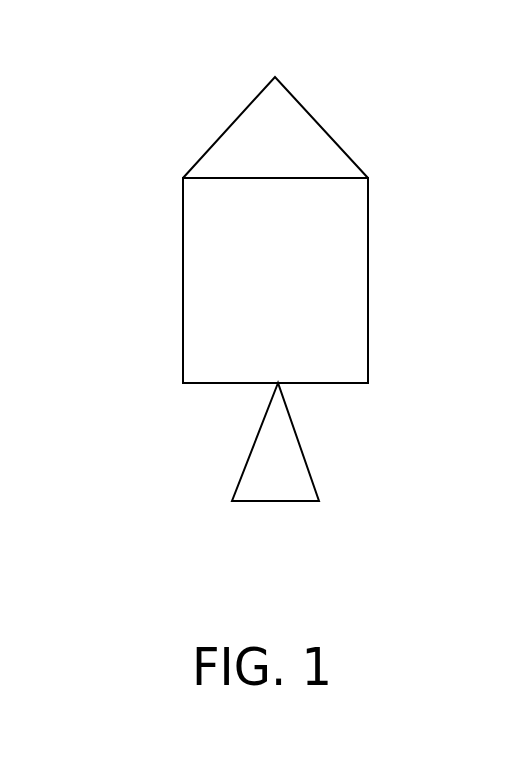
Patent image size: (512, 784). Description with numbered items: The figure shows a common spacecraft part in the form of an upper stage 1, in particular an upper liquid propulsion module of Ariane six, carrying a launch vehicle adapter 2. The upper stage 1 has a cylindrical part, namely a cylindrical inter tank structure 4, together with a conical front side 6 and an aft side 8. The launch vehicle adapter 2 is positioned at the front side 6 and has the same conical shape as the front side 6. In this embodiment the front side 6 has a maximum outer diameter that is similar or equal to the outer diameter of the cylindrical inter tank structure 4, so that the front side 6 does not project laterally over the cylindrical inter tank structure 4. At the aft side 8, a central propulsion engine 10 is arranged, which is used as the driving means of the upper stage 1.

The upper stage 1 is at (164, 48).
The launch vehicle adapter 2 is at (327, 122).
The cylindrical inter tank structure 4 is at (327, 238).
The conical front side 6 is at (127, 179).
The aft side 8 is at (119, 383).
The central propulsion engine 10 is at (284, 473).